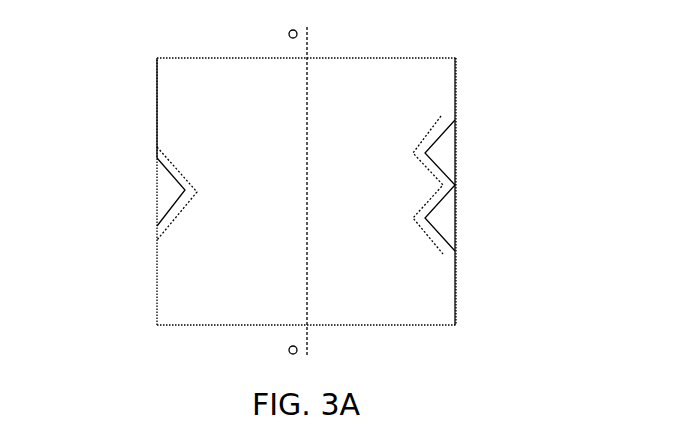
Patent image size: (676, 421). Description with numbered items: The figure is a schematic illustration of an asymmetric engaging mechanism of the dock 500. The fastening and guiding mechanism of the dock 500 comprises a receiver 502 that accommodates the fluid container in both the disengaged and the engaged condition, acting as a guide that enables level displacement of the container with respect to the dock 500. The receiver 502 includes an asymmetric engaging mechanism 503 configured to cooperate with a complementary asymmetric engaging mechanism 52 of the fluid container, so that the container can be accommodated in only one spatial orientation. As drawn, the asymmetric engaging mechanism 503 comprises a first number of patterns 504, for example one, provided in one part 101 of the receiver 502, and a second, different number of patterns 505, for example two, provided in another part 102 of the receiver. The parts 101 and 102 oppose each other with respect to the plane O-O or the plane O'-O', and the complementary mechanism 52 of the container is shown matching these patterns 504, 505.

The dock 500 is at (244, 191).
The part of the receiver 101 is at (148, 296).
The another part of the receiver 102 is at (459, 312).
The asymmetric engaging mechanism 503 is at (449, 109).
The receiver 502 is at (156, 131).
The patterns 504 is at (161, 190).
The patterns 505 is at (456, 153).
The complementary asymmetric engaging mechanism 52 is at (190, 181).